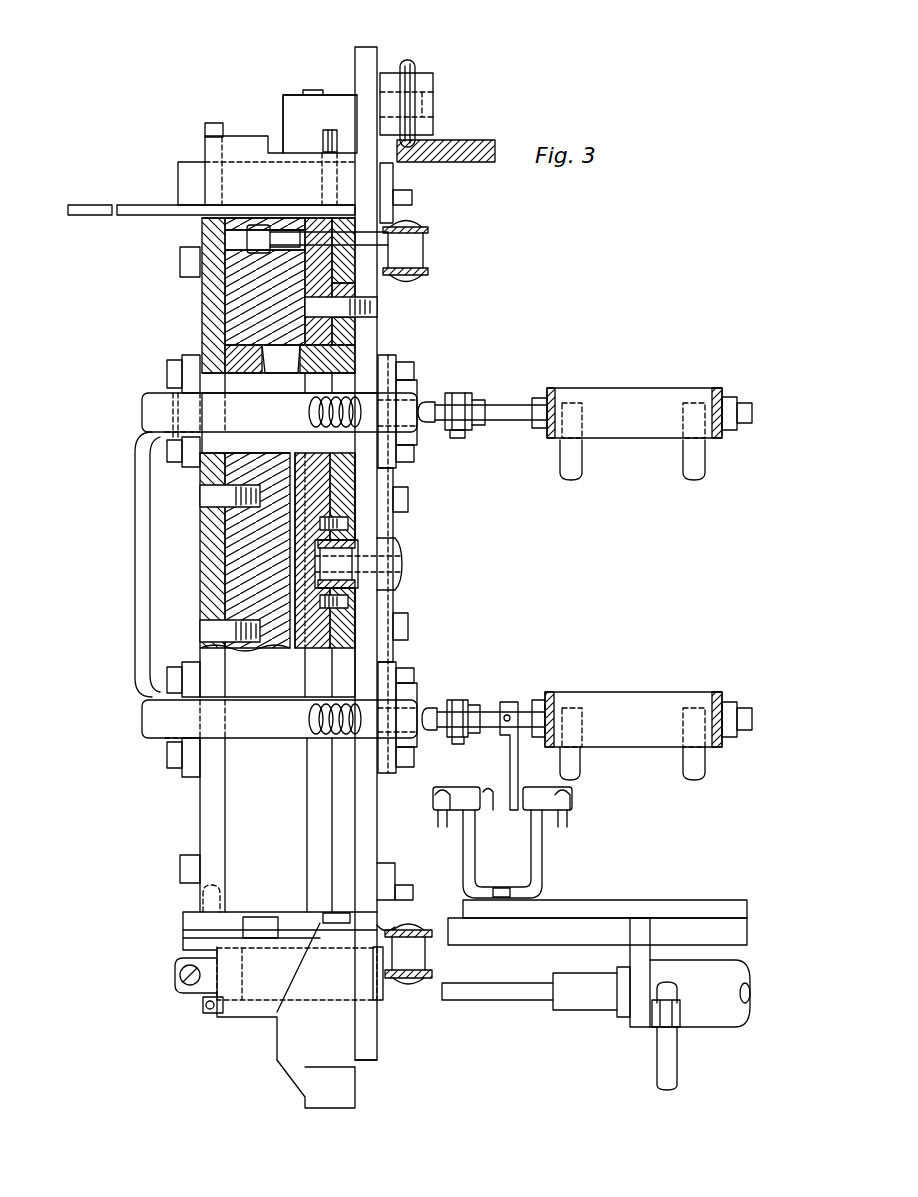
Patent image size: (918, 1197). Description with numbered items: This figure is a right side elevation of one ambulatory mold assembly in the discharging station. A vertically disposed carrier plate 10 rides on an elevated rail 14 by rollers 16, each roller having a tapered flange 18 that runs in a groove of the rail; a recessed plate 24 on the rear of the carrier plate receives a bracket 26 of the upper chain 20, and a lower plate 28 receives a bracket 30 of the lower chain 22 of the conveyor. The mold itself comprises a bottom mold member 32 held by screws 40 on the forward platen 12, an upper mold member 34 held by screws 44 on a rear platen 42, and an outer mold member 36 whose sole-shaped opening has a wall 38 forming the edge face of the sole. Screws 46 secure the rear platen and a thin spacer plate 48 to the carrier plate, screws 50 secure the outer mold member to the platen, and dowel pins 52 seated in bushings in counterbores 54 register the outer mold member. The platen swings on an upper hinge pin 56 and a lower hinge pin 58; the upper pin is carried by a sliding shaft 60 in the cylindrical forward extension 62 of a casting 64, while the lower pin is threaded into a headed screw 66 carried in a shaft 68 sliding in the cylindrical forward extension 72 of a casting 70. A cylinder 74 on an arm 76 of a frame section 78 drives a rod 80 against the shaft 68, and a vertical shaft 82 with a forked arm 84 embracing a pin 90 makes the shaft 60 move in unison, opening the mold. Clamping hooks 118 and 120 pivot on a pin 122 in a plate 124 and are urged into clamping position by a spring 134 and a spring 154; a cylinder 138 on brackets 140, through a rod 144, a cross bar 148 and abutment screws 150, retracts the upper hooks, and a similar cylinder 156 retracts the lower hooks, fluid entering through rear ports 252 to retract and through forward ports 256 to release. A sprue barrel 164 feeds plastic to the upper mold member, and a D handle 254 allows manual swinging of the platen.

The carrier plate 10 is at (364, 58).
The platen 12 is at (203, 540).
The rail 14 is at (478, 162).
The rollers 16 is at (430, 80).
The tapered flange 18 is at (407, 62).
The chain 20 is at (418, 279).
The chain 22 is at (432, 990).
The plate 24 is at (390, 179).
The bracket 26 is at (410, 230).
The plate 28 is at (385, 878).
The bracket 30 is at (412, 912).
The bottom mold member 32 is at (242, 368).
The upper mold member 34 is at (312, 600).
The outer mold member 36 is at (240, 306).
The wall 38 is at (232, 348).
The screws 40 is at (206, 497).
The rear platen 42 is at (345, 342).
The screws 44 is at (335, 527).
The screws 46 is at (375, 307).
The spacer plate 48 is at (320, 228).
The screws 50 is at (185, 259).
The dowel pins 52 is at (365, 239).
The counterbores 54 is at (262, 225).
The upper hinge pin 56 is at (212, 127).
The lower hinge pin 58 is at (203, 900).
The shaft 60 is at (178, 175).
The cylindrical forward extension 62 is at (262, 140).
The casting 64 is at (228, 199).
The headed screw 66 is at (203, 1008).
The shaft 68 is at (175, 978).
The casting 70 is at (292, 1070).
The cylindrical forward extension 72 is at (247, 1020).
The cylinder 74 is at (720, 1017).
The arm 76 is at (640, 1017).
The frame section 78 is at (700, 910).
The rod 80 is at (513, 1000).
The vertical shaft 82 is at (310, 92).
The forked arm 84 is at (285, 110).
The pin 90 is at (330, 130).
The upper clamping hooks 118 is at (150, 430).
The lower clamping hooks 120 is at (152, 725).
The pin 122 is at (405, 370).
The plate 124 is at (418, 396).
The spring 134 is at (312, 412).
The cylinder 138 is at (638, 395).
The brackets 140 is at (551, 388).
The rod 144 is at (512, 412).
The cross bar 148 is at (460, 430).
The abutment screws 150 is at (428, 425).
The spring 154 is at (312, 718).
The cylinder 156 is at (645, 692).
The sprue barrel 164 is at (396, 566).
The rear ports 252 is at (705, 458).
The D handle 254 is at (135, 550).
The ports 256 is at (572, 458).